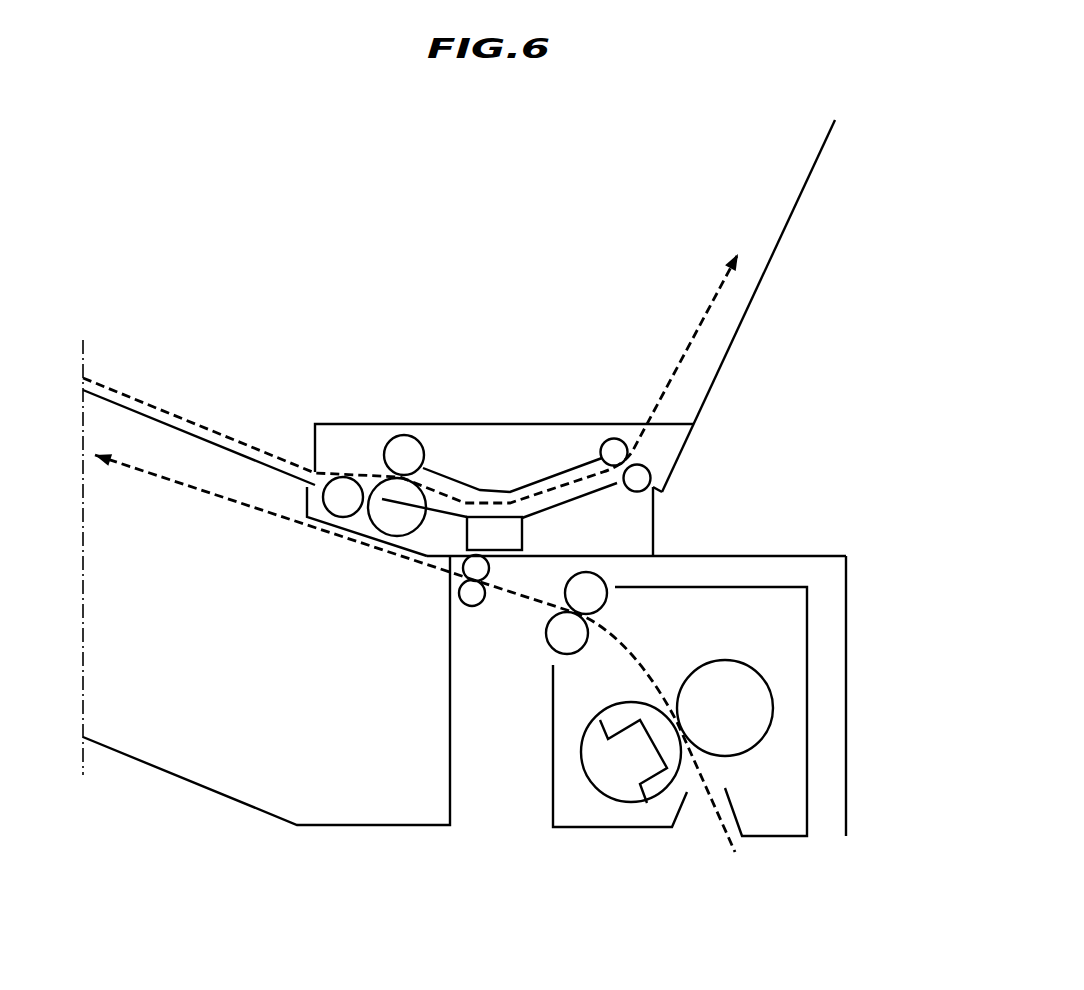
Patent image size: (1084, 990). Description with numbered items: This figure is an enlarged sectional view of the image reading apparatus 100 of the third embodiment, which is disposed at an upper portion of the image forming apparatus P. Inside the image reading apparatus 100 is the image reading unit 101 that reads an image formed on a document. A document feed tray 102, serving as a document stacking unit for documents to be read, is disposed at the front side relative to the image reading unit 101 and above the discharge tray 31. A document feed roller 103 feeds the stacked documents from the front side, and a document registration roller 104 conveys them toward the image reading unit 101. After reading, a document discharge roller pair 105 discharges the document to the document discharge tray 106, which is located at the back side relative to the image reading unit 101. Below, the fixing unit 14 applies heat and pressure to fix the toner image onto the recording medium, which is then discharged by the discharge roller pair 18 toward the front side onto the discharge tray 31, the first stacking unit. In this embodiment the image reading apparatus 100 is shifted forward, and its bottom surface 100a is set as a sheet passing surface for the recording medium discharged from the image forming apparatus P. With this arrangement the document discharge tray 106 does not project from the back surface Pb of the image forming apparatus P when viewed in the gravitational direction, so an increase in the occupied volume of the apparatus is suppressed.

The image reading apparatus 100 is at (503, 402).
The bottom surface 100a is at (372, 543).
The image reading unit 101 is at (510, 535).
The document feed tray 102 is at (202, 437).
The document feed roller 103 is at (345, 487).
The document registration roller 104 is at (405, 448).
The document discharge roller pair 105 is at (614, 438).
The document discharge tray 106 is at (797, 198).
The discharge roller pair 18 is at (472, 598).
The discharge tray 31 is at (177, 775).
The fixing unit 14 is at (783, 647).
The image forming apparatus P is at (795, 522).
The back surface Pb is at (846, 768).